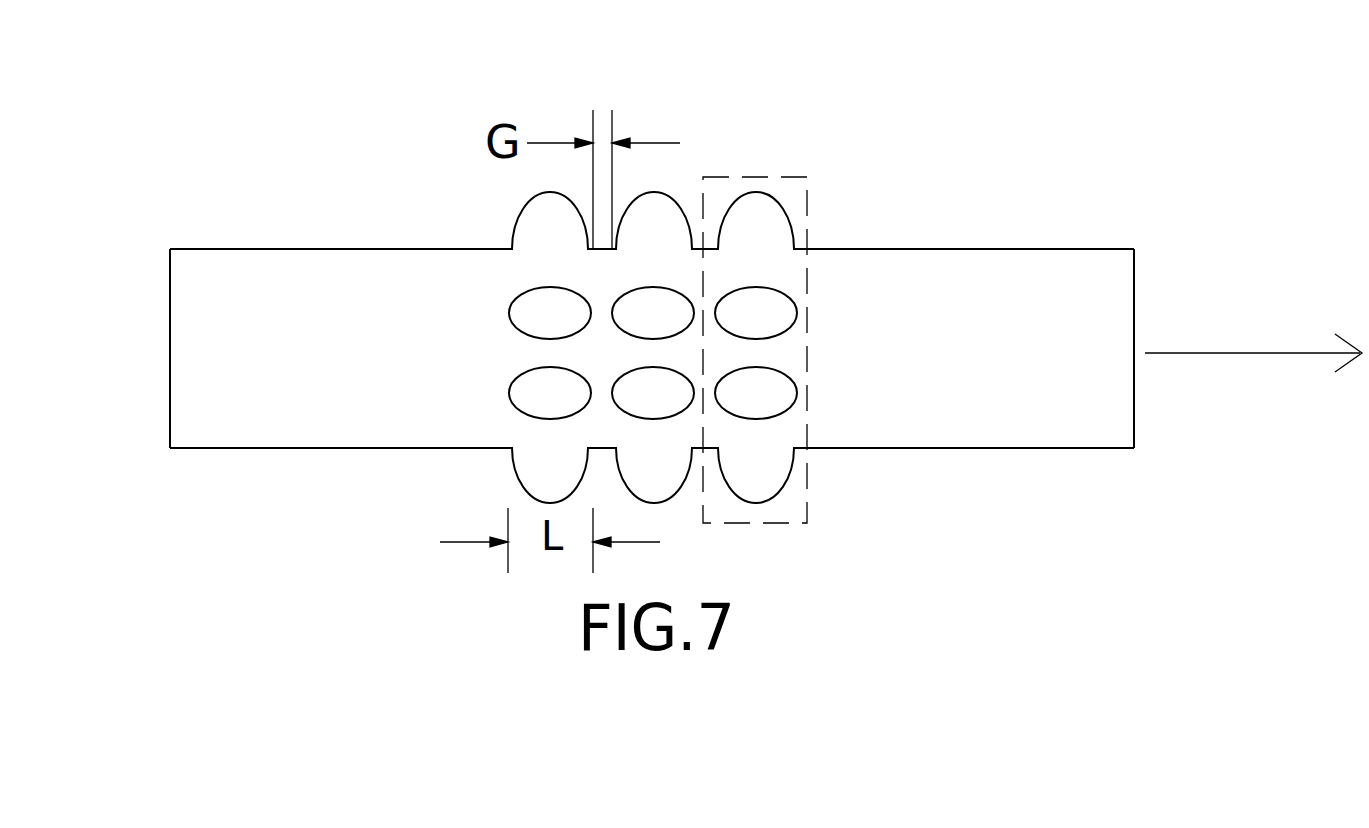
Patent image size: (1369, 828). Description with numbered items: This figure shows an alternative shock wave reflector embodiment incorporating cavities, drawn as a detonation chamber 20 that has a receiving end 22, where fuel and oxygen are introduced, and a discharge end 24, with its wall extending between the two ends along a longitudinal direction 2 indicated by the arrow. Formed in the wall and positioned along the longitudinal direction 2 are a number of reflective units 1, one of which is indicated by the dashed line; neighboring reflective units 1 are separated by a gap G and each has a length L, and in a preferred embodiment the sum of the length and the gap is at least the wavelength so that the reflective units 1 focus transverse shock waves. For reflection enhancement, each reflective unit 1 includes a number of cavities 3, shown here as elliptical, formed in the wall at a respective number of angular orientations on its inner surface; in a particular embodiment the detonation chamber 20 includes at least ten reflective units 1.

The reflective unit 1 is at (785, 510).
The longitudinal direction 2 is at (1253, 362).
The cavity 3 is at (772, 312).
The detonation chamber 20 is at (987, 428).
The receiving end 22 is at (170, 405).
The discharge end 24 is at (1134, 410).